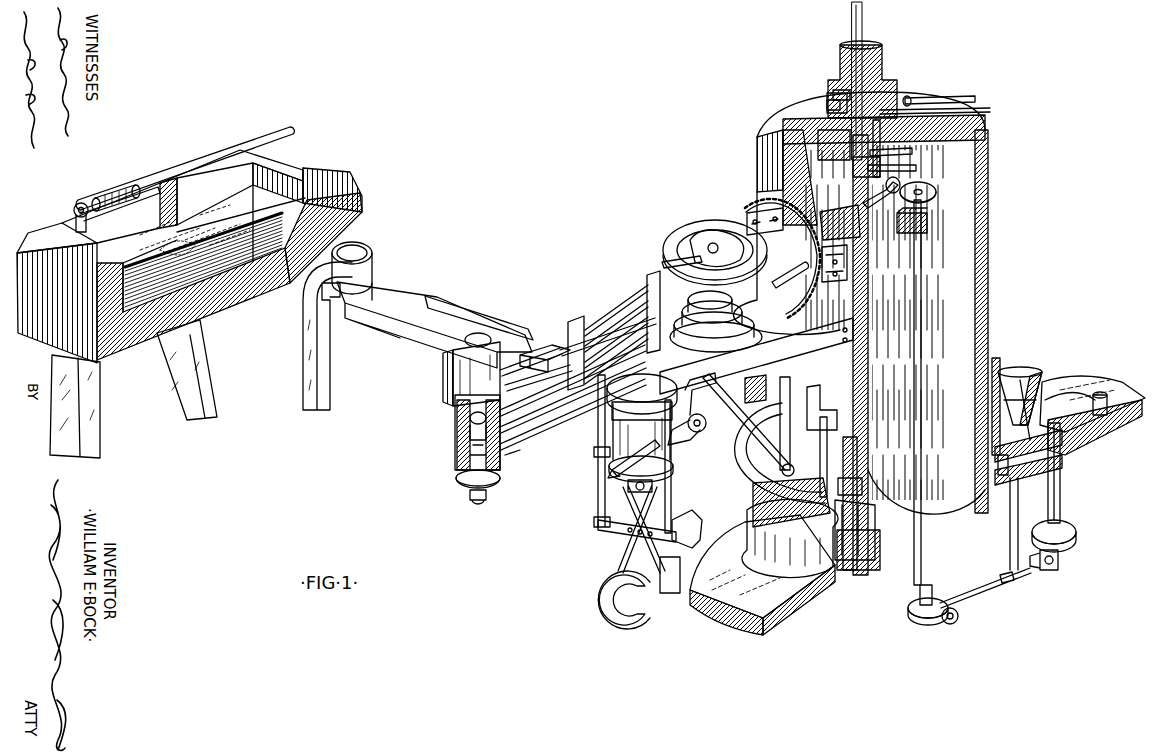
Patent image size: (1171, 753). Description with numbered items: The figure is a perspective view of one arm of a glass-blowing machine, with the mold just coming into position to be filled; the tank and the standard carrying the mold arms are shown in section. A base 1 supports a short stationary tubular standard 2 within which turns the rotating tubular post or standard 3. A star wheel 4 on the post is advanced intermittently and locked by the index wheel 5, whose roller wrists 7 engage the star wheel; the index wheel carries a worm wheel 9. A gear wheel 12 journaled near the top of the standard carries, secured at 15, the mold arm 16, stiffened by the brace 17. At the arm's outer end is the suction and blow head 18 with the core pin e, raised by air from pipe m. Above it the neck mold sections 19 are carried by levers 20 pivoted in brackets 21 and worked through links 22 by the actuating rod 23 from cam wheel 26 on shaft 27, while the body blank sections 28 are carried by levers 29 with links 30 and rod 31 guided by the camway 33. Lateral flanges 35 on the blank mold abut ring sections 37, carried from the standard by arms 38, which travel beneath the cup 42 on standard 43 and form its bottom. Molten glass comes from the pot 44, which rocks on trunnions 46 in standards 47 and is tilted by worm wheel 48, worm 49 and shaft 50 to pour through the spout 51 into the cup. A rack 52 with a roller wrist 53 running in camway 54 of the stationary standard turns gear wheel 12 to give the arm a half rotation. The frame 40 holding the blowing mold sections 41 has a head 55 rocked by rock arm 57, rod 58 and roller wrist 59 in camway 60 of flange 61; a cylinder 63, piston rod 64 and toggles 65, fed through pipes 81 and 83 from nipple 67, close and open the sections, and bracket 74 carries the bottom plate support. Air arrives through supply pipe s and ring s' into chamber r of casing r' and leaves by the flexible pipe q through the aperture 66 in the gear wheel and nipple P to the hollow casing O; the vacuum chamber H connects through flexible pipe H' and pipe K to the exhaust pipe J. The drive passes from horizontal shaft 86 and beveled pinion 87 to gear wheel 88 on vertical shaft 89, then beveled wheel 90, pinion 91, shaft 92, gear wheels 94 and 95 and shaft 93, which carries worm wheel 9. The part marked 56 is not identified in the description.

The base 1 is at (735, 605).
The short tubular standard 2 is at (858, 455).
The rotating tubular post or standard 3 is at (866, 397).
The star wheel 4 is at (882, 562).
The index wheel 5 is at (1135, 420).
The roller wrists 7 is at (1106, 392).
The worm wheel 9 is at (1050, 392).
The gear wheel 12 is at (760, 200).
The securing point of mold arm 15 is at (750, 212).
The mold arm 16 is at (572, 405).
The brace or bracket 17 is at (775, 295).
The suction and blow head 18 is at (455, 447).
The neck mold sections 19 is at (455, 415).
The levers 20 is at (516, 430).
The brackets 21 is at (530, 432).
The links 22 is at (538, 345).
The actuating rod 23 is at (618, 325).
The cam wheel 26 is at (690, 228).
The shaft 27 is at (712, 242).
The body blank sections 28 is at (443, 372).
The levers 29 is at (528, 350).
The links 30 is at (550, 350).
The rod 31 is at (593, 330).
The camway 33 is at (692, 243).
The lateral flanges 35 is at (428, 345).
The ring sections 37 is at (385, 308).
The arms 38 is at (428, 295).
The frame 40 is at (598, 500).
The blowing mold sections 41 is at (605, 604).
The cup 42 is at (358, 247).
The standard 43 is at (303, 403).
The tank or pot 44 is at (235, 305).
The trunnions 46 is at (143, 178).
The standards 47 is at (155, 405).
The worm wheel 48 is at (110, 196).
The worm 49 is at (85, 200).
The shaft 50 is at (180, 172).
The spout 51 is at (333, 195).
The rack 52 is at (822, 296).
The roller wrist 53 is at (863, 500).
The camway 54 is at (1015, 370).
The head 55 is at (605, 300).
The link 56 is at (688, 432).
The rock arm 57 is at (698, 432).
The rod 58 is at (745, 420).
The roller wrist 59 is at (902, 541).
The camway 60 is at (755, 466).
The flange 61 is at (755, 500).
The cylinder 63 is at (608, 476).
The piston rod 64 is at (605, 530).
The toggles 65 is at (620, 560).
The aperture in gear wheel 66 is at (822, 263).
The nipple 67 is at (699, 440).
The bracket 74 is at (690, 530).
The pipe 81 is at (620, 438).
The pipe 83 is at (665, 465).
The horizontal shaft 86 is at (775, 287).
The beveled pinion 87 is at (900, 178).
The beveled gear wheel 88 is at (937, 190).
The vertical shaft 89 is at (922, 267).
The beveled wheel 90 is at (925, 620).
The beveled pinion 91 is at (953, 625).
The horizontal shaft 92 is at (990, 590).
The shaft 93 is at (1062, 488).
The gear wheel 94 is at (1048, 572).
The gear wheel 95 is at (1078, 534).
The exhaust pipe J is at (867, 18).
The pipe K is at (885, 78).
The supply pipe s is at (939, 75).
The chamber r is at (944, 103).
The casing r' is at (818, 78).
The ring s' is at (801, 92).
The flexible pipe q is at (820, 140).
The vacuum chamber H is at (891, 161).
The flexible pipe H' is at (873, 151).
The nipple P is at (640, 378).
The hollow casing O is at (670, 320).
The core plunger or pin e is at (462, 468).
The pipe m is at (478, 498).